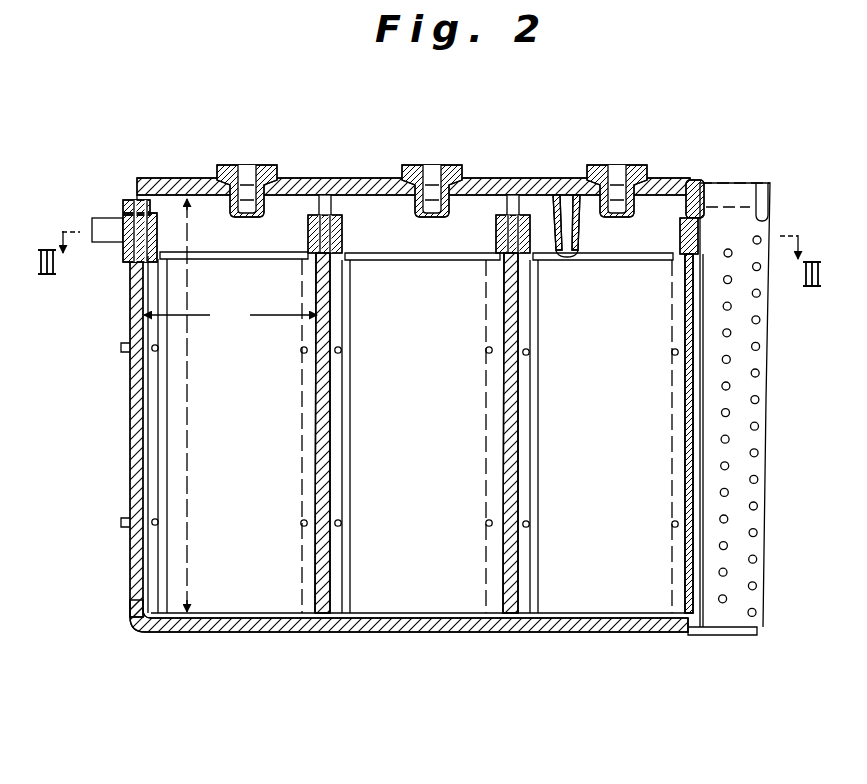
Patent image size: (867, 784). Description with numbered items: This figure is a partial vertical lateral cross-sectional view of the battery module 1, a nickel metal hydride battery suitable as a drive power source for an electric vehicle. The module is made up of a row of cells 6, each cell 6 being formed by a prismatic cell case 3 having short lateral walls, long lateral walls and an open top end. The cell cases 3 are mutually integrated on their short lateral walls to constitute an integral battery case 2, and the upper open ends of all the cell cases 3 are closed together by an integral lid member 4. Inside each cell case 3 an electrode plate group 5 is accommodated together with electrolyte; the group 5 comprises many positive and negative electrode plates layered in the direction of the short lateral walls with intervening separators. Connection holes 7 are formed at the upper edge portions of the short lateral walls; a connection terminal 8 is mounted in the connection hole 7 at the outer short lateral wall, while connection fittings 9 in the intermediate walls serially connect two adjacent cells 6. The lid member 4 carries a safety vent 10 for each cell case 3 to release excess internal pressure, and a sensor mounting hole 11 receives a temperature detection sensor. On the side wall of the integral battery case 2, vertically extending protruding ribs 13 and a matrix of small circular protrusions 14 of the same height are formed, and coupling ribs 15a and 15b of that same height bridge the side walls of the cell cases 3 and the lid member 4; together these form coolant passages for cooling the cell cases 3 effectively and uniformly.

The battery module 1 is at (106, 422).
The integral battery case 2 is at (126, 497).
The cell case 3 is at (237, 632).
The lid member 4 is at (172, 180).
The electrode plate group 5 is at (222, 435).
The cell 6 is at (268, 635).
The connection hole 7 is at (158, 228).
The connection terminal 8 is at (108, 228).
The connection fitting 9 is at (345, 216).
The safety vent 10 is at (262, 166).
The sensor mounting hole 11 is at (563, 181).
The protruding rib 13 is at (698, 613).
The circular protrusion 14 is at (752, 617).
The coupling rib 15a is at (702, 183).
The coupling rib 15b is at (760, 183).